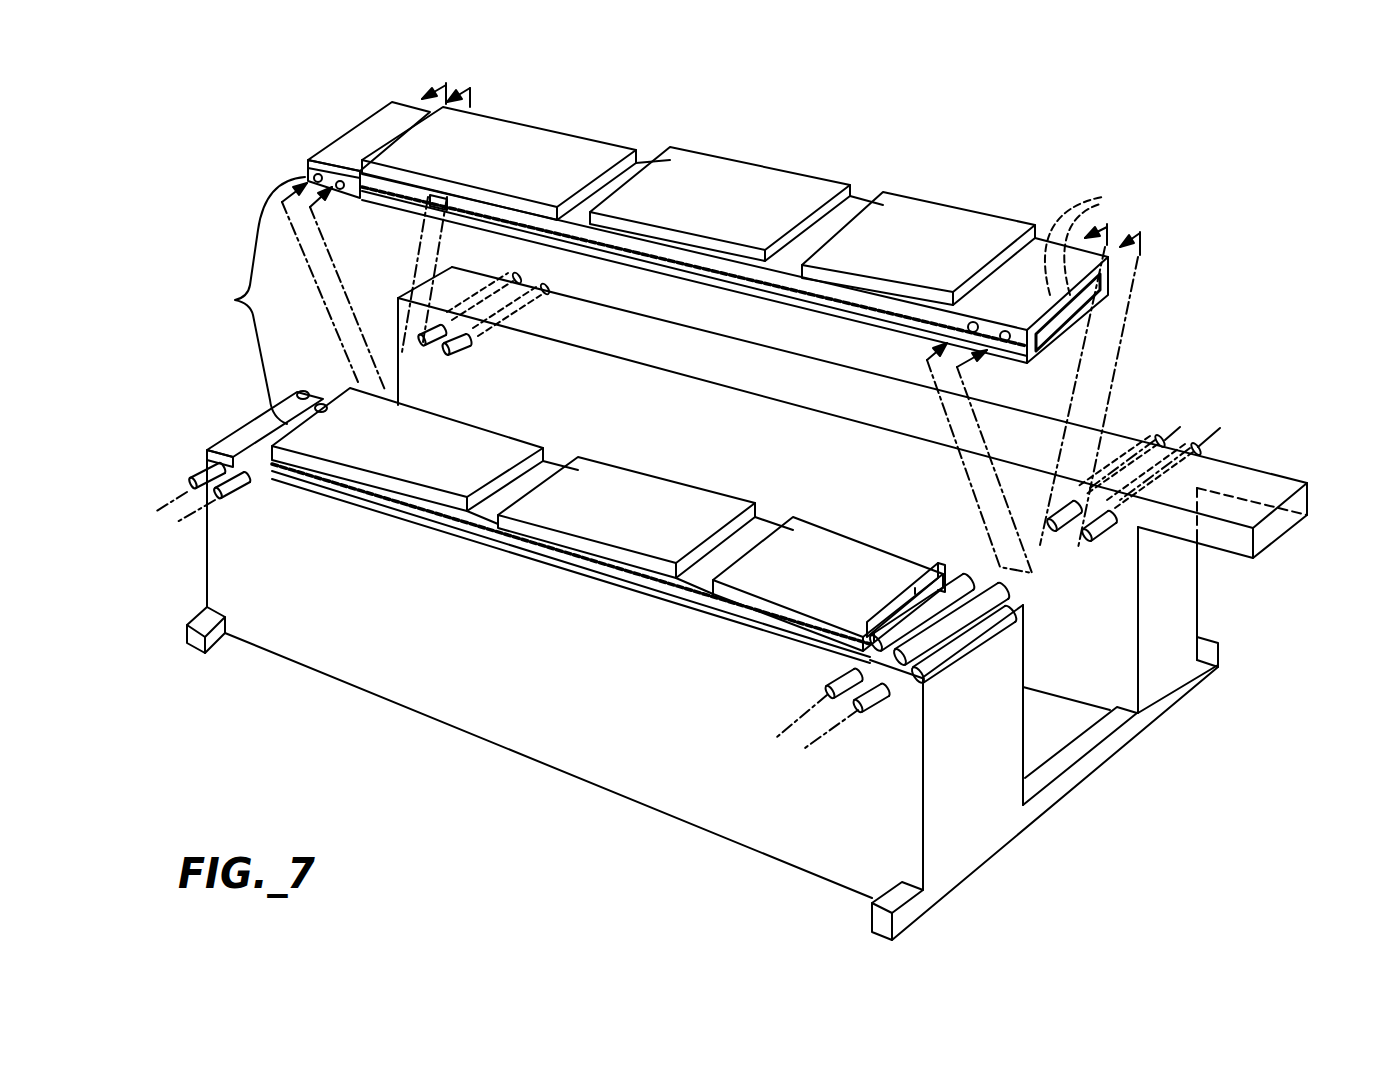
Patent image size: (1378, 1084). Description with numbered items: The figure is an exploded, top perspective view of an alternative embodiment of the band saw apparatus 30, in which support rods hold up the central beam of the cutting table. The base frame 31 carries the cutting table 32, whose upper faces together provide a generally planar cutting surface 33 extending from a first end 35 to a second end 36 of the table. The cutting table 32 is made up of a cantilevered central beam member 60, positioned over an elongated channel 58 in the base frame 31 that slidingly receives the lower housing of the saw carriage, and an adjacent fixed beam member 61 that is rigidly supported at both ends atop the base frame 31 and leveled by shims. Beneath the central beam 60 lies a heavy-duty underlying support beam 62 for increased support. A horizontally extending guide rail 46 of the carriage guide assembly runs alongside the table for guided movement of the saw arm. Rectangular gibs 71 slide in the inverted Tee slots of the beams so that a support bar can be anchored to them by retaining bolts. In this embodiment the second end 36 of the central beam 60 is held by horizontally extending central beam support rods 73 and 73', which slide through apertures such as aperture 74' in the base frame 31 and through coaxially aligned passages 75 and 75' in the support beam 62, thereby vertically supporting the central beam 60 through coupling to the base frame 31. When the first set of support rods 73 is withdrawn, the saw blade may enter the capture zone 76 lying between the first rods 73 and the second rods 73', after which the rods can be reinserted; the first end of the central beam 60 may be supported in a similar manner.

The band saw apparatus 30 is at (345, 758).
The base frame 31 is at (573, 748).
The cutting table 32 is at (291, 300).
The cutting surface 33 is at (462, 80).
The first end 35 is at (362, 122).
The second end 36 is at (936, 560).
The guide rail 46 is at (1247, 468).
The elongated channel 58 is at (1047, 753).
The central beam member 60 is at (940, 200).
The fixed beam member 61 is at (763, 620).
The support beam 62 is at (1070, 328).
The gib 71 is at (825, 686).
The central beam support rods (first set) 73 is at (849, 494).
The central beam support rods (second set) 73' is at (884, 535).
The aperture 74' is at (995, 634).
The passage 75 is at (941, 290).
The passage 75' is at (1078, 373).
The capture zone 76 is at (1090, 200).